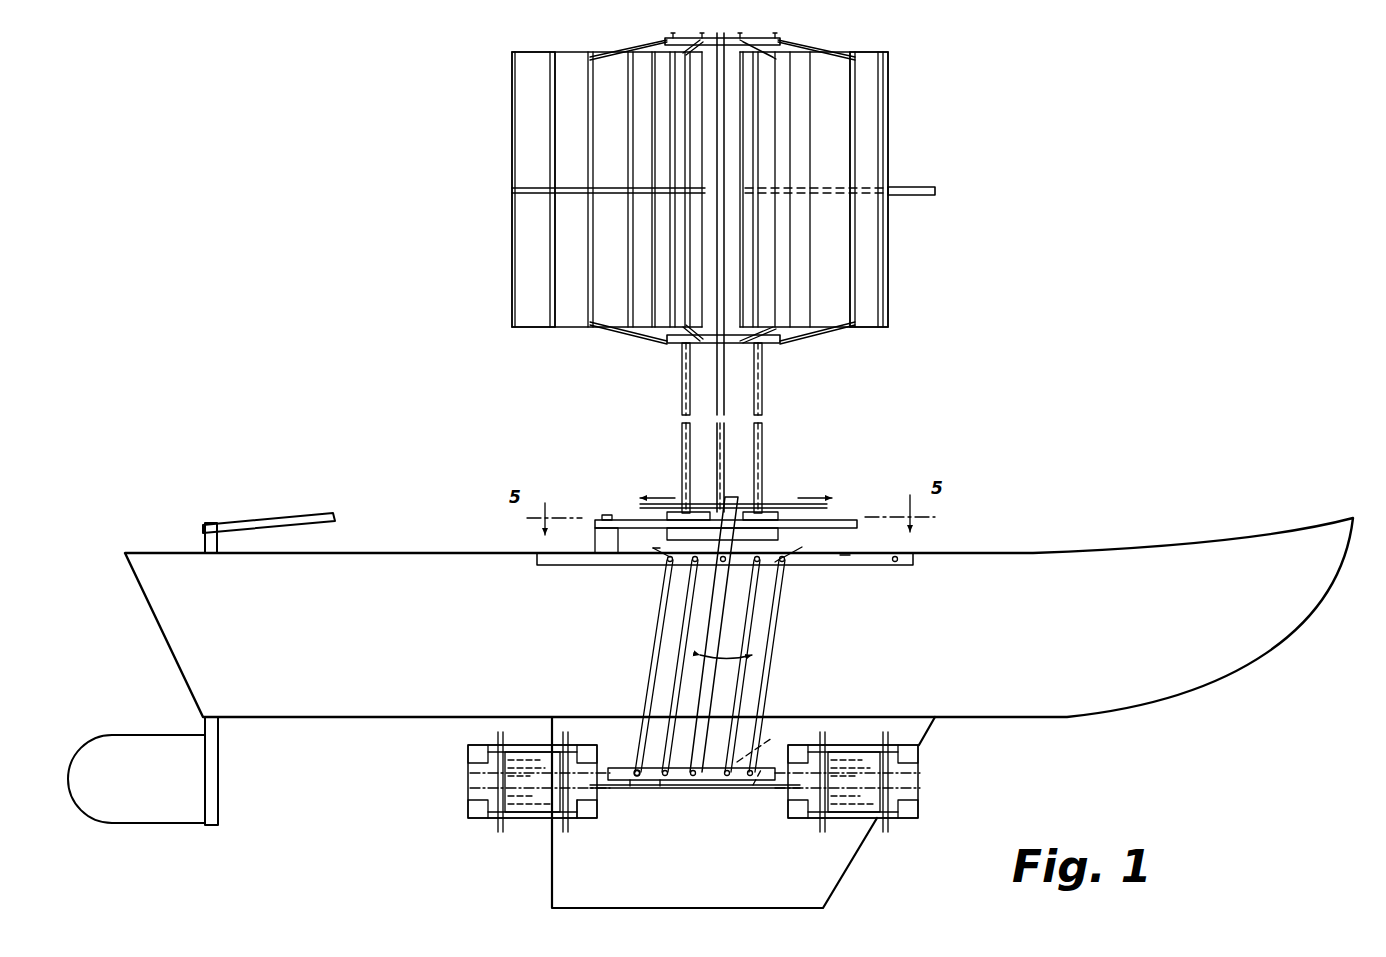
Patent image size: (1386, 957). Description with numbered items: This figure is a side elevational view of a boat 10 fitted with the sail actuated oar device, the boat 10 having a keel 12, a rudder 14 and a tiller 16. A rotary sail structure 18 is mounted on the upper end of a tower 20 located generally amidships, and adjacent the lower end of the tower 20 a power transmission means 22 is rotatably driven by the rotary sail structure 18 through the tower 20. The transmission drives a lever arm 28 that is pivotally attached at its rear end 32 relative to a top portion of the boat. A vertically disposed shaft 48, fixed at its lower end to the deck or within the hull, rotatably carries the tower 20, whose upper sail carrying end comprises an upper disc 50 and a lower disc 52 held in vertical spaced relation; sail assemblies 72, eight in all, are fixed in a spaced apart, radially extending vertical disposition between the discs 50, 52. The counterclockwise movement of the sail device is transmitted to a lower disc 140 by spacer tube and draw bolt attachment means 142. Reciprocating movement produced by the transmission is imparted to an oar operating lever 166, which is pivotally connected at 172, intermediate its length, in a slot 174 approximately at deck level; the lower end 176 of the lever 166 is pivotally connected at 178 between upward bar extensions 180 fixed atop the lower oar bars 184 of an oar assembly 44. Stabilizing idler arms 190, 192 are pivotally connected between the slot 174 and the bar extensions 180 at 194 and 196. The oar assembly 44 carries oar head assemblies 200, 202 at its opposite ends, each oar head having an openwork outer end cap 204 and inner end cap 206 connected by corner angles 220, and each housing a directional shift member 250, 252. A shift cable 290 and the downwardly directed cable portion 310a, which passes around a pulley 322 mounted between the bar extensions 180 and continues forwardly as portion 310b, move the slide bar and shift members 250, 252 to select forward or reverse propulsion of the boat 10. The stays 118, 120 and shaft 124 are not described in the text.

The boat 10 is at (1119, 516).
The keel 12 is at (698, 876).
The rudder 14 is at (158, 789).
The tiller 16 is at (246, 515).
The rotary sail structure 18 is at (742, 262).
The tower 20 is at (731, 428).
The power transmission means 22 is at (790, 548).
The lever arm 28 is at (625, 519).
The rear end of lever arm 32 is at (604, 515).
The oar assembly 44 is at (472, 831).
The shaft 48 is at (727, 46).
The upper disc 50 is at (776, 36).
The lower disc 52 is at (775, 344).
The sail assembly 72 is at (596, 50).
The upper stay 118 is at (648, 47).
The lower stay 120 is at (640, 334).
The cross shaft 124 is at (926, 190).
The lower disc 140 is at (770, 510).
The spacer tube and draw bolt attachment means 142 is at (763, 405).
The oar operating lever 166 is at (724, 628).
The pivotal connection 172 is at (760, 564).
The slot 174 is at (846, 561).
The lower end of lever 176 is at (708, 781).
The pivotal connection 178 is at (696, 782).
The upward bar extension 180 is at (676, 781).
The oar bar 184 is at (640, 781).
The stabilizing idler arm 190 is at (656, 655).
The stabilizing idler arm 192 is at (769, 667).
The pivotal connection 194 is at (668, 566).
The pivotal connection 196 is at (637, 768).
The oar head assembly 200 is at (514, 778).
The oar head assembly 202 is at (880, 795).
The outer end cap 204 is at (467, 804).
The inner end cap 206 is at (590, 822).
The corner angle 220 is at (514, 744).
The directional shift member 250 is at (528, 806).
The directional shift member 252 is at (855, 806).
The shift cable 290 is at (688, 621).
The downwardly directed cable portion 310a is at (748, 641).
The forwardly directed cable portion 310b is at (757, 784).
The pulley 322 is at (771, 743).